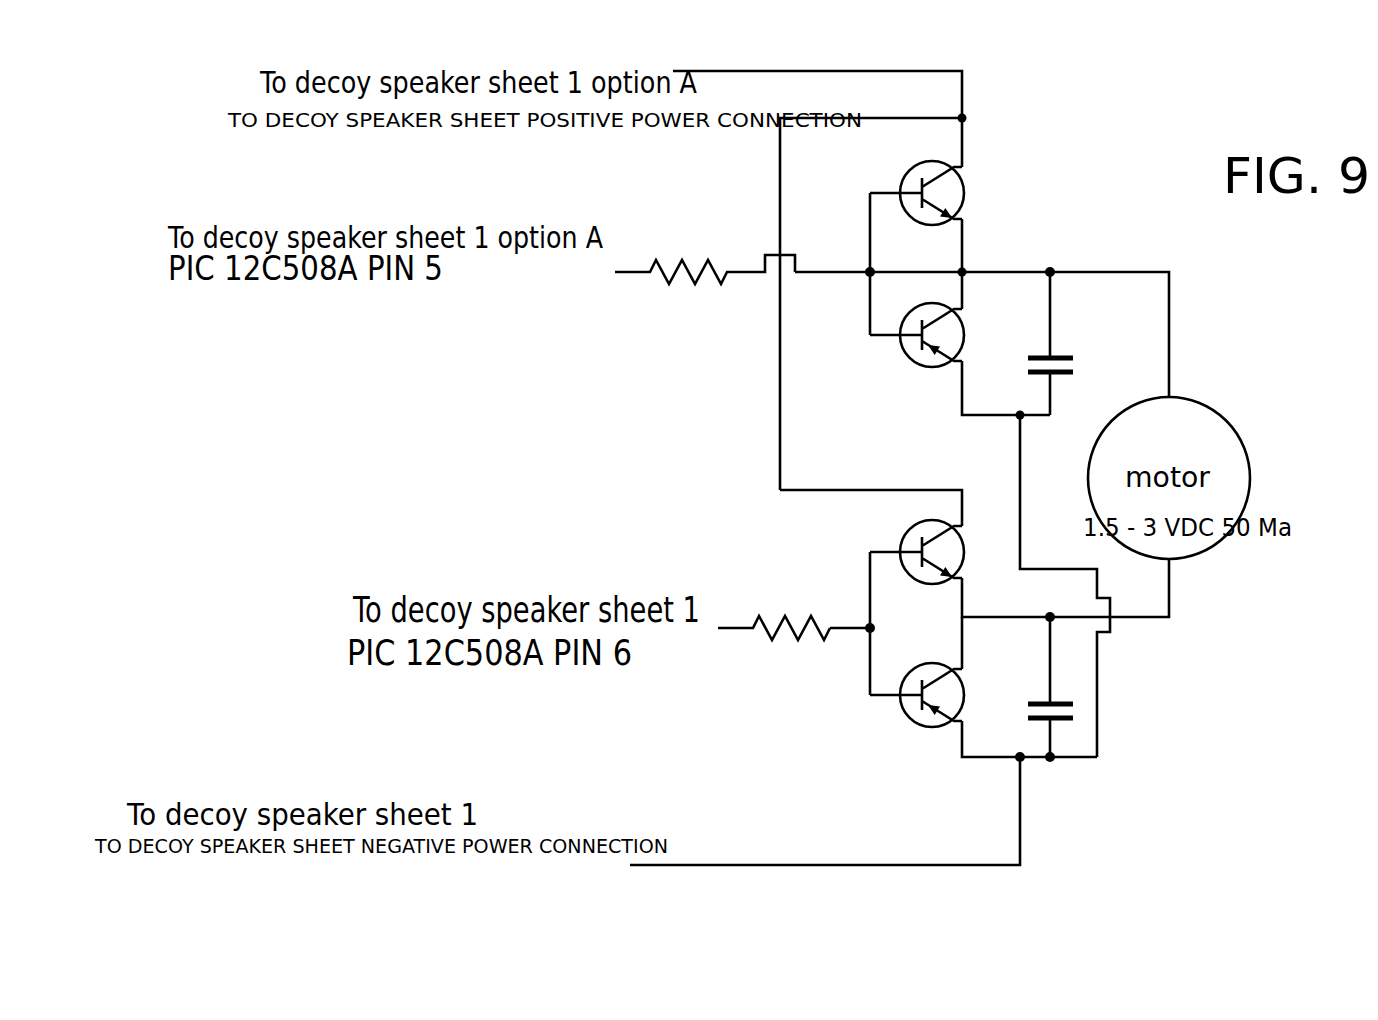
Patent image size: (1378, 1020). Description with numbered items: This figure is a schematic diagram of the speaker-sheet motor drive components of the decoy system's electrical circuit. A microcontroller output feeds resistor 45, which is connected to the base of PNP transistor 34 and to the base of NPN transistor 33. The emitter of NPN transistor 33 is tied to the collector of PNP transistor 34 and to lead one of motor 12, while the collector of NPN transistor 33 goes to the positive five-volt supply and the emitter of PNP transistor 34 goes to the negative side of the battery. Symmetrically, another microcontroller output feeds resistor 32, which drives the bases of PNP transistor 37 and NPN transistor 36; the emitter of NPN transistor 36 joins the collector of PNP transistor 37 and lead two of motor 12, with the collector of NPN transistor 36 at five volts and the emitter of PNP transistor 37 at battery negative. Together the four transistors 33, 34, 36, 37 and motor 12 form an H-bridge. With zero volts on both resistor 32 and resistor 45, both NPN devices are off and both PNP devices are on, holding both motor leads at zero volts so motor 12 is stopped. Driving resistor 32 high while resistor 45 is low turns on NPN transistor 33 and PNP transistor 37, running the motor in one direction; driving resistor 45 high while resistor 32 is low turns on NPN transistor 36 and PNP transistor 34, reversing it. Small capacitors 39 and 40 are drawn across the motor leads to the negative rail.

The motor 12 is at (1265, 436).
The resistor 32 is at (670, 312).
The NPN transistor 33 is at (988, 171).
The PNP transistor 34 is at (1005, 262).
The NPN transistor 36 is at (964, 481).
The PNP transistor 37 is at (920, 789).
The .1 microfarad capacitor (upper) 39 is at (1094, 296).
The .1 microfarad capacitor (lower) 40 is at (1086, 778).
The resistor 45 is at (772, 671).